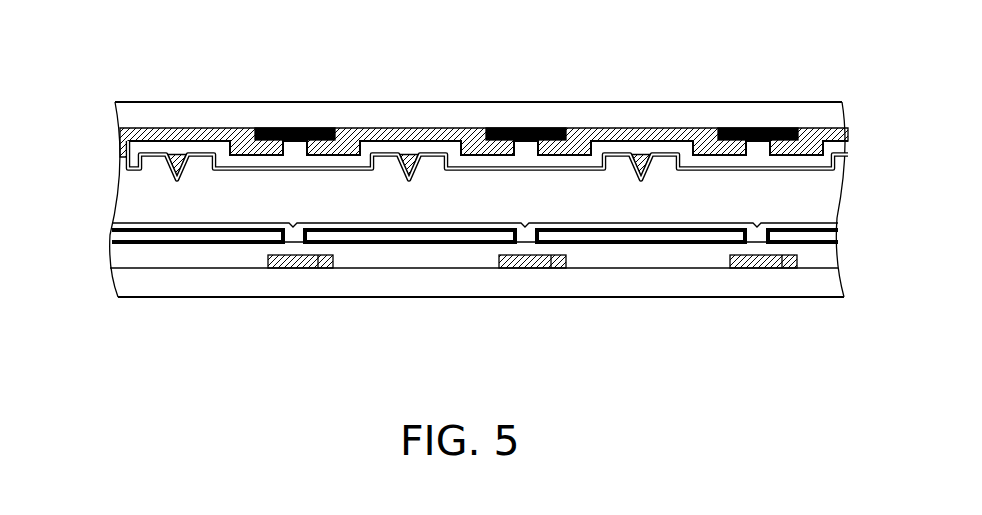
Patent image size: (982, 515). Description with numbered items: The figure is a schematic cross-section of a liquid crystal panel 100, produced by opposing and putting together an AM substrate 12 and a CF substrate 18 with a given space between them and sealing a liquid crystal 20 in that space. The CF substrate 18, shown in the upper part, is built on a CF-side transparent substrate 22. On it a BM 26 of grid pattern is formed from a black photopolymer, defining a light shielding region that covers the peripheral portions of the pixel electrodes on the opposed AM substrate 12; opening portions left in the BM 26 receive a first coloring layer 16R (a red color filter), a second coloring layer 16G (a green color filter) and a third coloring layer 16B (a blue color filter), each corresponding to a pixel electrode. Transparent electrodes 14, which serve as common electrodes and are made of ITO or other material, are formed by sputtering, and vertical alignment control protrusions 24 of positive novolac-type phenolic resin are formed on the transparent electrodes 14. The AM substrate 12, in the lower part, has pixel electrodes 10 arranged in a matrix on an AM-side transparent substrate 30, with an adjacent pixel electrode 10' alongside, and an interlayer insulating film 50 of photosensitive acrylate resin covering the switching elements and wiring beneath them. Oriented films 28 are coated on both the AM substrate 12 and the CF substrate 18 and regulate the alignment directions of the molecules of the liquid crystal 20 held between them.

The liquid crystal panel 100 is at (752, 85).
The CF substrate 18 is at (111, 130).
The CF-side transparent substrate 22 is at (815, 118).
The first coloring layer 16R is at (182, 133).
The second coloring layer 16G is at (458, 130).
The third coloring layer 16B is at (636, 130).
The BM 26 is at (278, 130).
The vertical alignment control protrusion 24 is at (694, 128).
The transparent electrode 14 is at (845, 147).
The oriented film 28 is at (838, 170).
The liquid crystal 20 is at (120, 198).
The AM substrate 12 is at (109, 263).
The pixel electrode 10 is at (410, 214).
The pixel electrode 10' is at (475, 214).
The interlayer insulating film 50 is at (205, 255).
The AM-side transparent substrate 30 is at (825, 284).